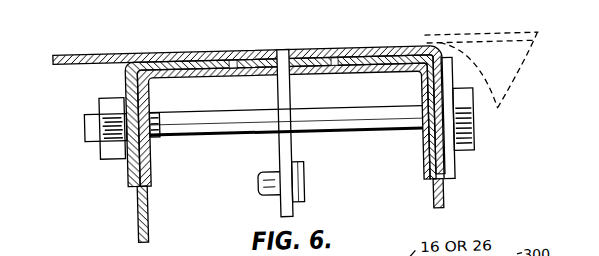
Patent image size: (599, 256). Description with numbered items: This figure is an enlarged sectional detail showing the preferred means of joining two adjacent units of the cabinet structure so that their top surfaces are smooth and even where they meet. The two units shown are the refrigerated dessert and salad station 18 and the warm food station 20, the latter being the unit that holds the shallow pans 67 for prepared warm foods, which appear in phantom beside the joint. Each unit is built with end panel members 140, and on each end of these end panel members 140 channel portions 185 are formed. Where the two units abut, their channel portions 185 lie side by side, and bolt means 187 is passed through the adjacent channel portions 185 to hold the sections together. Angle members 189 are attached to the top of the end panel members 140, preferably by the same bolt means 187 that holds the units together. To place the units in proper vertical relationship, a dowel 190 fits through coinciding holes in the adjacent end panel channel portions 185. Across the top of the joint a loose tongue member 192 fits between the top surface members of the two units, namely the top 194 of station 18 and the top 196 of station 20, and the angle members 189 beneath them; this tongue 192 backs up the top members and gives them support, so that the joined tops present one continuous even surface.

The refrigerated dessert and salad station 18 is at (70, 50).
The warm food station 20 is at (287, 99).
The pans 67 is at (501, 42).
The end panel members 140 is at (132, 200).
The channel portions 185 is at (204, 179).
The bolt means 187 is at (248, 126).
The angle members 189 is at (173, 73).
The dowel 190 is at (300, 189).
The loose tongue member 192 is at (287, 56).
The top of station 18 194 is at (237, 57).
The top of station 20 196 is at (361, 52).